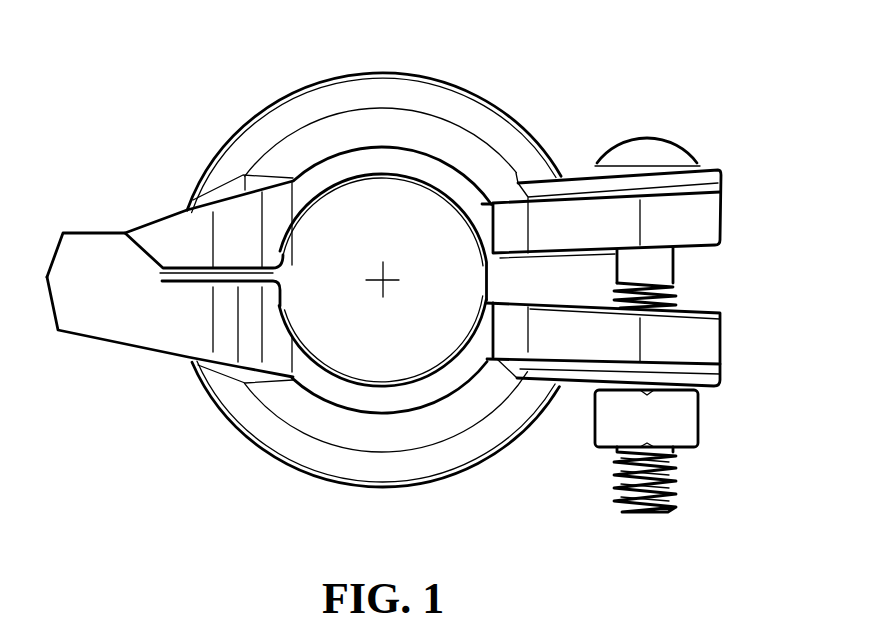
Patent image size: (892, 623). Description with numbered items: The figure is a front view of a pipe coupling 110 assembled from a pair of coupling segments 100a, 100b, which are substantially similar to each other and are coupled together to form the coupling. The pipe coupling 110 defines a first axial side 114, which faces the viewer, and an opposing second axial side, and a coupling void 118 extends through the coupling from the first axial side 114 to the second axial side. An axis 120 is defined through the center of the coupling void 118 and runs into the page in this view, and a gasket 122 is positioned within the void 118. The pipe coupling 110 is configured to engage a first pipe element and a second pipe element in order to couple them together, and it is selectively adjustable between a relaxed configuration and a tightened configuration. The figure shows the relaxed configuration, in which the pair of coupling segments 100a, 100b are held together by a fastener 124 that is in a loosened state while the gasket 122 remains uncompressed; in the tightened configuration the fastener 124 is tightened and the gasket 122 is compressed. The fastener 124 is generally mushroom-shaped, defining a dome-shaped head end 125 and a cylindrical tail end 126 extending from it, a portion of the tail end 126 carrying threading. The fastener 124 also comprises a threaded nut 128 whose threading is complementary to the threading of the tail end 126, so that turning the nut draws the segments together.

The pipe coupling 110 is at (203, 98).
The coupling segment 100a is at (513, 100).
The coupling segment 100b is at (305, 470).
The first axial side 114 is at (365, 163).
The coupling void 118 is at (422, 208).
The gasket 122 is at (500, 290).
The axis 120 is at (383, 282).
The fastener 124 is at (705, 275).
The dome-shaped head end 125 is at (673, 153).
The cylindrical tail end 126 is at (673, 488).
The threaded nut 128 is at (687, 425).